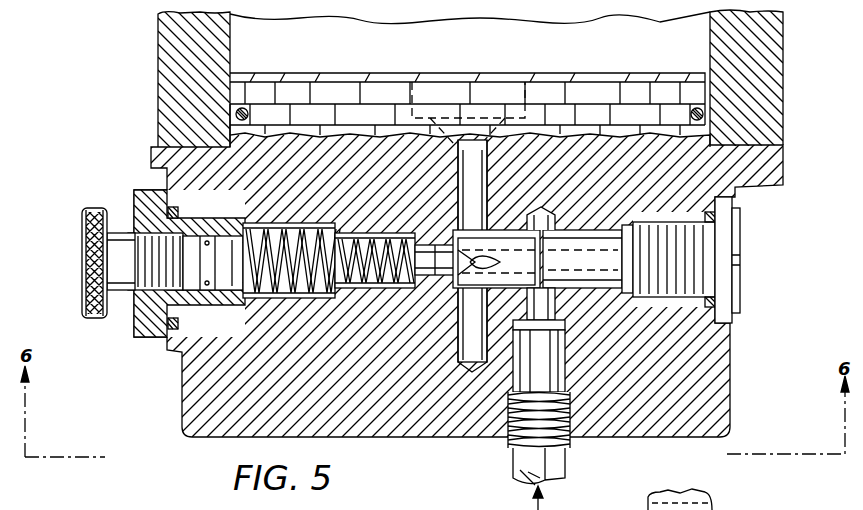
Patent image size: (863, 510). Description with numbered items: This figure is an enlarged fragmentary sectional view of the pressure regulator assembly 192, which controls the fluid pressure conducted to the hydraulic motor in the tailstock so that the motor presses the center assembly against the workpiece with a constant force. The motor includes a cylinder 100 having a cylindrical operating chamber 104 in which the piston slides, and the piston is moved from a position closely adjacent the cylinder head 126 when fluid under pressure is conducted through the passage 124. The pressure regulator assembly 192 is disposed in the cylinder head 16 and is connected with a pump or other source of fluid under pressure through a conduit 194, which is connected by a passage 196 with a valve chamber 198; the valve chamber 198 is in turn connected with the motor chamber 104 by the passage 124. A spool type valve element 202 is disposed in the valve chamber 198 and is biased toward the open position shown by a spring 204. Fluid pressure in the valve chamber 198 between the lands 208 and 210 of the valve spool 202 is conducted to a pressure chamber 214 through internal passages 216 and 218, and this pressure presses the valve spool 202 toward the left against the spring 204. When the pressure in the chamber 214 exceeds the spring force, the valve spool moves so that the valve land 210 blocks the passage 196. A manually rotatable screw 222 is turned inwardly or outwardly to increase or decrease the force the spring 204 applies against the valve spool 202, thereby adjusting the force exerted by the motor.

The cylinder head 16 is at (733, 381).
The cylinder 100 is at (173, 100).
The cylindrical operating chamber 104 is at (250, 37).
The passage 124 is at (475, 153).
The cylinder head 126 is at (205, 402).
The pressure regulator assembly 192 is at (75, 206).
The conduit 194 is at (522, 463).
The passage 196 is at (545, 303).
The valve chamber 198 is at (490, 230).
The spool type valve element 202 is at (582, 240).
The spring 204 is at (322, 290).
The land 208 is at (452, 240).
The valve land 210 is at (600, 300).
The pressure chamber 214 is at (633, 228).
The internal passage 216 is at (450, 312).
The internal passage 218 is at (428, 250).
The manually rotatable screw 222 is at (88, 275).